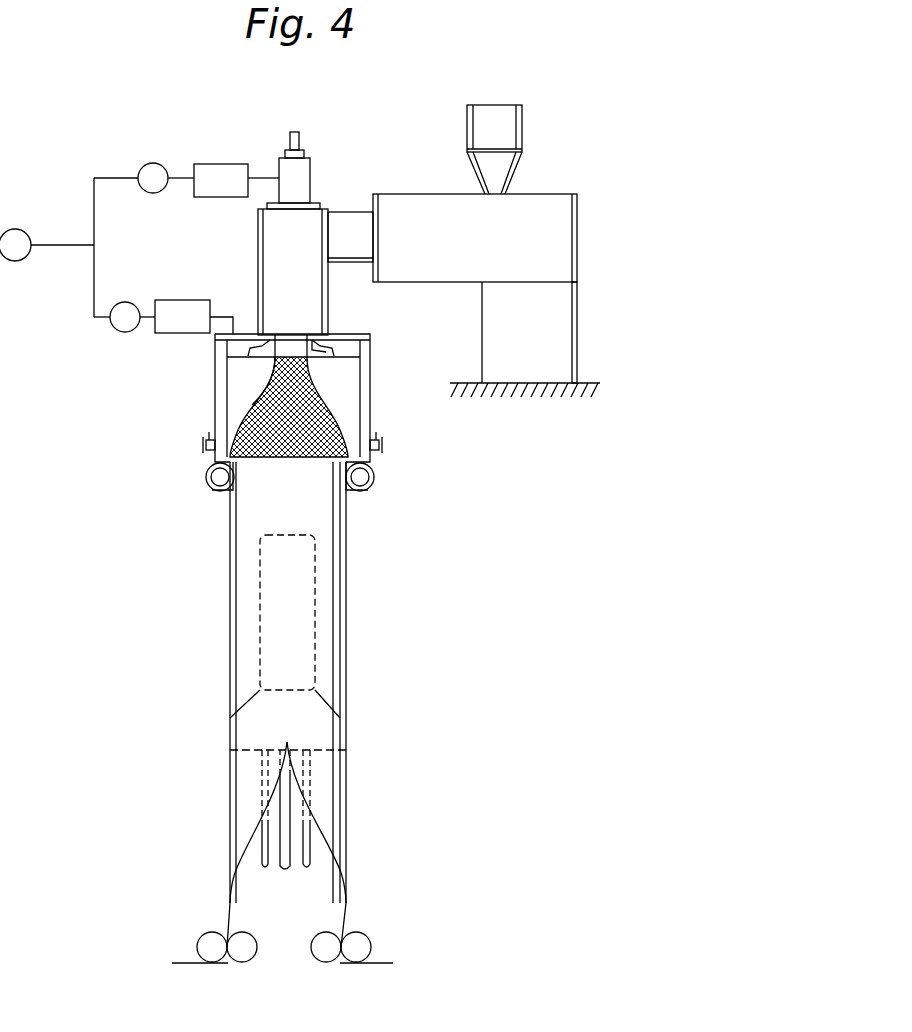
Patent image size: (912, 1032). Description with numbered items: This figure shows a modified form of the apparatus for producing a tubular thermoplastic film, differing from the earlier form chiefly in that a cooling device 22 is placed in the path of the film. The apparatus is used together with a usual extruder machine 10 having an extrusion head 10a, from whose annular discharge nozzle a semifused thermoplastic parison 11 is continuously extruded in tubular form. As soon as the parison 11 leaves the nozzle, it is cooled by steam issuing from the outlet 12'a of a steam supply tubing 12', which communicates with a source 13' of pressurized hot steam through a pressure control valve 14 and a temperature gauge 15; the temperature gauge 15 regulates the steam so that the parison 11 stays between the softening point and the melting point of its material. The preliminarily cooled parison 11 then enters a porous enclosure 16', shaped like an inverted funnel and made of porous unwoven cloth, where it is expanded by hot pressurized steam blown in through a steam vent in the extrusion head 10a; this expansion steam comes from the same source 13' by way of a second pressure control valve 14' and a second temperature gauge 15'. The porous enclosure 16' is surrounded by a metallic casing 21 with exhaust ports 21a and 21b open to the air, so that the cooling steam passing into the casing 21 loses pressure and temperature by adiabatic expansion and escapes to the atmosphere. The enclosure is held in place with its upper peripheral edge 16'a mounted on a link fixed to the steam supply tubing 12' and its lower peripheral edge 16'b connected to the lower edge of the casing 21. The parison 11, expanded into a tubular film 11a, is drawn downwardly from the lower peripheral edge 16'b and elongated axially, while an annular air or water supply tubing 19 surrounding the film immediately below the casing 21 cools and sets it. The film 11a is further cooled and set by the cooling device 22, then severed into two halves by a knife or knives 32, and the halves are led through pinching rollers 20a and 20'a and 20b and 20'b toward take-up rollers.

The extruder machine 10 is at (422, 182).
The extrusion head 10a is at (258, 240).
The parison 11 is at (287, 334).
The tubular film 11a is at (347, 543).
The steam supply tubing 12' is at (315, 325).
The outlet of steam supply tubing 12'a is at (339, 368).
The source of pressurized hot steam 13' is at (47, 247).
The pressure control valve 14 is at (143, 158).
The pressure control valve 14' is at (130, 298).
The temperature gauge 15 is at (223, 160).
The temperature gauge 15' is at (186, 299).
The porous enclosure 16' is at (293, 407).
The upper peripheral edge of porous enclosure 16'a is at (252, 381).
The lower peripheral edge of porous enclosure 16'b is at (288, 682).
The annular air or water supply tubing 19 is at (374, 480).
The pinching roller 20a is at (200, 935).
The pinching roller 20'a is at (262, 967).
The pinching roller 20b is at (327, 965).
The pinching roller 20'b is at (382, 934).
The metallic casing 21 is at (370, 417).
The exhaust port 21a is at (205, 445).
The exhaust port 21b is at (378, 445).
The cooling device 22 is at (318, 603).
The knife 32 is at (292, 766).